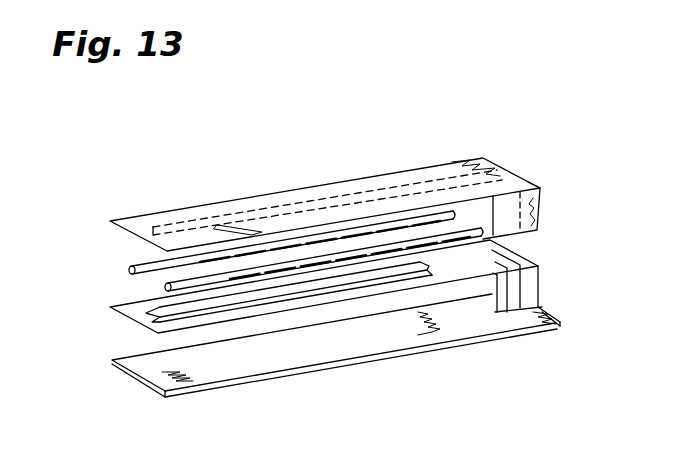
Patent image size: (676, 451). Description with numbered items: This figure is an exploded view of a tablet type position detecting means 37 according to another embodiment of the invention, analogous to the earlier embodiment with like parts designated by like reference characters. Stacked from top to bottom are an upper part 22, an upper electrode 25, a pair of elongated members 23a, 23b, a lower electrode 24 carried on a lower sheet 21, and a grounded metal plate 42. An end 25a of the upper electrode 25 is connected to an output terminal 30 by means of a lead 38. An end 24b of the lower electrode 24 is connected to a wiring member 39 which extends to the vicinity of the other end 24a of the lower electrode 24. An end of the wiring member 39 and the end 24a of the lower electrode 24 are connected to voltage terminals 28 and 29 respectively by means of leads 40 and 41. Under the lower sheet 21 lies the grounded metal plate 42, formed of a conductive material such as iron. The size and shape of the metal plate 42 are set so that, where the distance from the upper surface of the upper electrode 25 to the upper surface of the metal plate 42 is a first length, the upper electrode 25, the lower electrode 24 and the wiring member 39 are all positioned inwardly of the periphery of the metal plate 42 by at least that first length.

The lower sheet 21 is at (103, 317).
The cover block 22 is at (437, 114).
The guide rod 23a is at (130, 268).
The guide rod 23b is at (168, 289).
The lower electrode 24 is at (243, 300).
The end of lower electrode 24a is at (423, 275).
The end of lower electrode 24b is at (148, 318).
The upper electrode 25 is at (266, 200).
The end of upper electrode 25a is at (392, 187).
The voltage terminal 28 is at (515, 312).
The voltage terminal 29 is at (540, 323).
The output terminal 30 is at (541, 228).
The position detecting means 37 is at (548, 176).
The lead 38 is at (462, 160).
The wiring member 39 is at (320, 298).
The lead 40 is at (540, 268).
The lead 41 is at (540, 292).
The metal plate 42 is at (321, 357).